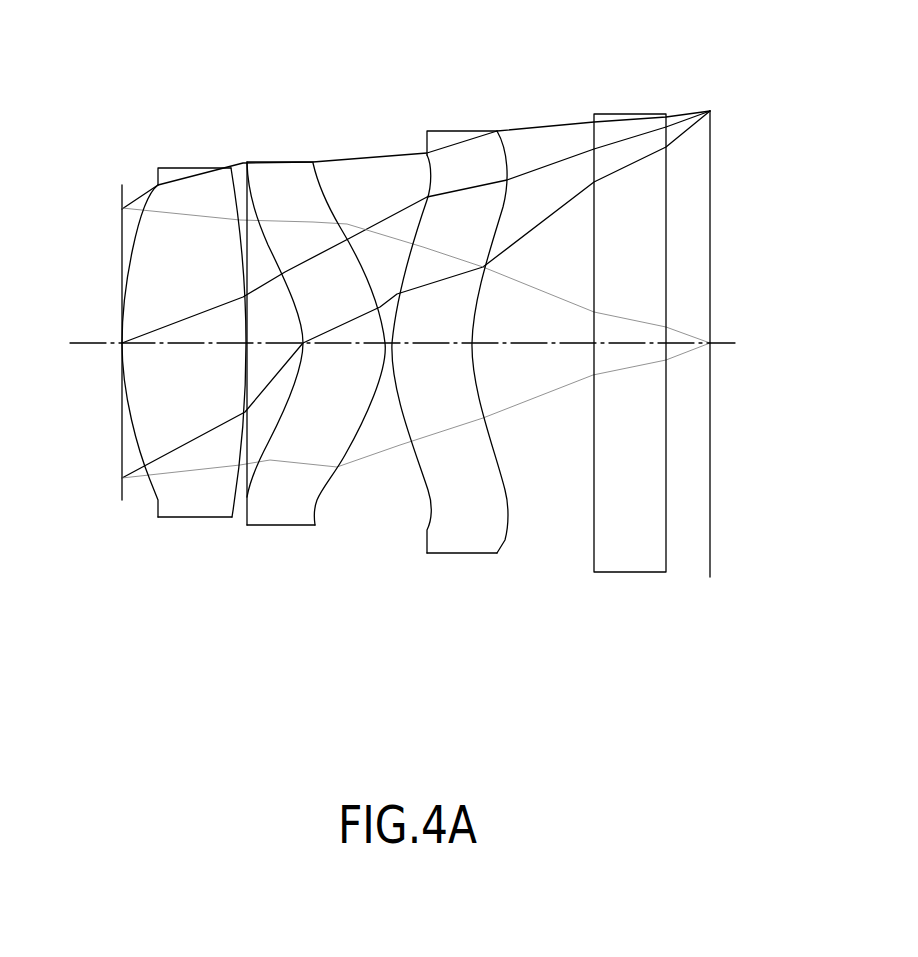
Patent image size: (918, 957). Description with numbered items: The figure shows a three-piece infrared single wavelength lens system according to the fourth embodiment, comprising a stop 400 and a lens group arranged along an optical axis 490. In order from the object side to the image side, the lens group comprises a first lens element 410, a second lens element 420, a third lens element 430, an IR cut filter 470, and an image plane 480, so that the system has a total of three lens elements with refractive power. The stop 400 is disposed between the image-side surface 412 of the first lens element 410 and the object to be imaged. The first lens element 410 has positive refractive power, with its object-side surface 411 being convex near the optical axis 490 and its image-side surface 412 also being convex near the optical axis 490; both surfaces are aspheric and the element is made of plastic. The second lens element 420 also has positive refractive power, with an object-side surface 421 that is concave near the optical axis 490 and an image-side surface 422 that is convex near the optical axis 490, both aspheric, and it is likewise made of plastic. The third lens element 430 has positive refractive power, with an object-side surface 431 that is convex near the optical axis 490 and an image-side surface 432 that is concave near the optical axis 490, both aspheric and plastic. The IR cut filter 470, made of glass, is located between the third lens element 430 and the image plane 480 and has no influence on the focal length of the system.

The stop 400 is at (120, 189).
The first lens element 410 is at (184, 355).
The object-side surface 411 is at (150, 480).
The image-side surface 412 is at (239, 477).
The second lens element 420 is at (308, 352).
The object-side surface 421 is at (232, 517).
The image-side surface 422 is at (332, 495).
The third lens element 430 is at (457, 338).
The object-side surface 431 is at (423, 480).
The image-side surface 432 is at (505, 490).
The IR cut filter 470 is at (613, 115).
The image plane 480 is at (710, 523).
The optical axis 490 is at (92, 342).